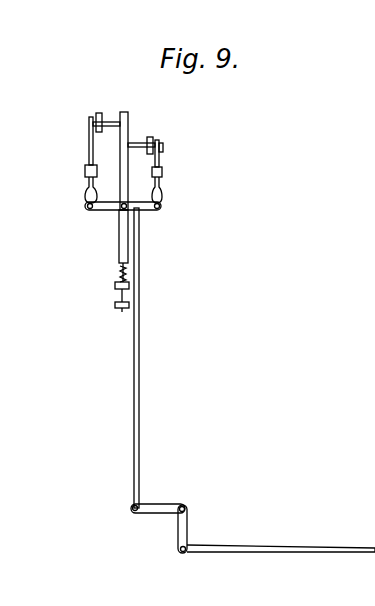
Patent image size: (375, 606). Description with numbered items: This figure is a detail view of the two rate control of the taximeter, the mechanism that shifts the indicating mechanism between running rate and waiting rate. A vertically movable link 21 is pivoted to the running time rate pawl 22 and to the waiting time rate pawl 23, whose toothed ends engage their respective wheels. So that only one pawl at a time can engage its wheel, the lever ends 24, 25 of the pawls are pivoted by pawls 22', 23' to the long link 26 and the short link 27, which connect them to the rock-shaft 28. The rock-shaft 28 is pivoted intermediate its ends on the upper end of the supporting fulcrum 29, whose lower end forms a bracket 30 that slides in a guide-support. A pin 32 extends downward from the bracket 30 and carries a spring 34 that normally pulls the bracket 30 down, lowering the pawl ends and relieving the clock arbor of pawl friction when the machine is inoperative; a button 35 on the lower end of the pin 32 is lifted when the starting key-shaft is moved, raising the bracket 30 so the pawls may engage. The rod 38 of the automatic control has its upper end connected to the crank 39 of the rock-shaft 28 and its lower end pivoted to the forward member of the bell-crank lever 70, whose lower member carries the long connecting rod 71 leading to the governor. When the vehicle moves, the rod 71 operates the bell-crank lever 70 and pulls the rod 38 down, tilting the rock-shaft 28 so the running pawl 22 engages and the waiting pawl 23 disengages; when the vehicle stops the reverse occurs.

The vertically movable link 21 is at (123, 170).
The running time rate pawl 22 is at (106, 101).
The pawl 22' is at (143, 115).
The waiting time rate pawl 23 is at (169, 136).
The pawl 23' is at (171, 121).
The lever end 24 is at (90, 120).
The lever end 25 is at (164, 146).
The long link 26 is at (89, 150).
The short link 27 is at (163, 168).
The rock-shaft 28 is at (130, 197).
The supporting fulcrum 29 is at (118, 230).
The bracket 30 is at (118, 258).
The pin 32 is at (116, 302).
The spring 34 is at (121, 276).
The button 35 is at (122, 309).
The rod 38 is at (139, 272).
The crank 39 is at (140, 207).
The bell-crank lever 70 is at (154, 507).
The long connecting rod 71 is at (260, 547).